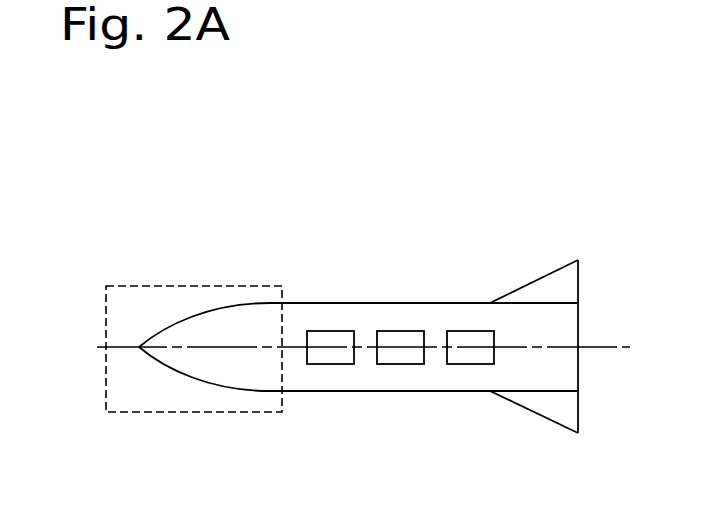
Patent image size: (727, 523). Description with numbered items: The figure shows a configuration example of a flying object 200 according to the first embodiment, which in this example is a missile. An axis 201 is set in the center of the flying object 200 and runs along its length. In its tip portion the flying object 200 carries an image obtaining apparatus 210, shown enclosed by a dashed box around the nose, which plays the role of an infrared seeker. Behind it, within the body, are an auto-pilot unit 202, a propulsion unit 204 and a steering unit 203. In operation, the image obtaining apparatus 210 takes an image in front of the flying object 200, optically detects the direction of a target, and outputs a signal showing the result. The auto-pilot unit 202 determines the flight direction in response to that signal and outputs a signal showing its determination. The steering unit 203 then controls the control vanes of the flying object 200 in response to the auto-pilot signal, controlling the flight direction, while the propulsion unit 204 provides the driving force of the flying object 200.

The flying object 200 is at (383, 273).
The axis 201 is at (617, 347).
The auto-pilot unit 202 is at (317, 364).
The steering unit 203 is at (465, 365).
The propulsion unit 204 is at (403, 364).
The image obtaining apparatus 210 is at (192, 285).